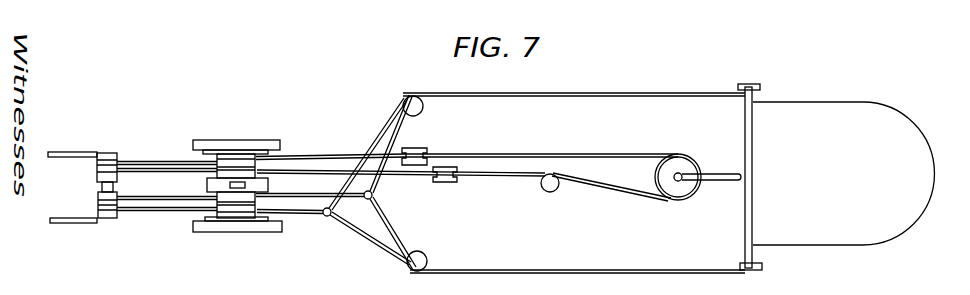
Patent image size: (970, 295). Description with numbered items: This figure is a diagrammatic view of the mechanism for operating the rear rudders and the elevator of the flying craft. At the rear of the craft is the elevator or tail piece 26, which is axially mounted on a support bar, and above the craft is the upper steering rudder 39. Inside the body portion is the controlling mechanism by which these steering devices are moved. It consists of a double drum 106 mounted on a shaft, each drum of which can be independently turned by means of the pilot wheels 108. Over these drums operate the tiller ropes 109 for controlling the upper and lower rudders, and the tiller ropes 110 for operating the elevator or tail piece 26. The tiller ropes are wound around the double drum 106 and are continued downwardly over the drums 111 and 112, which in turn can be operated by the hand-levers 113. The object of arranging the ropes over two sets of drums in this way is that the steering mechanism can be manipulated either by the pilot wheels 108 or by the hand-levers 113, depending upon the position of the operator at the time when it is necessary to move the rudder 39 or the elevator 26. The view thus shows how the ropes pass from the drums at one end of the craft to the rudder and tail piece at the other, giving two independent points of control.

The elevator or tail piece 26 is at (843, 173).
The steering rudder 39 is at (723, 173).
The double drum 106 is at (208, 188).
The pilot wheels 108 is at (273, 133).
The tiller ropes 109 is at (320, 171).
The tiller ropes 110 is at (325, 216).
The drum 111 is at (100, 176).
The drum 112 is at (98, 198).
The hand-levers 113 is at (78, 152).